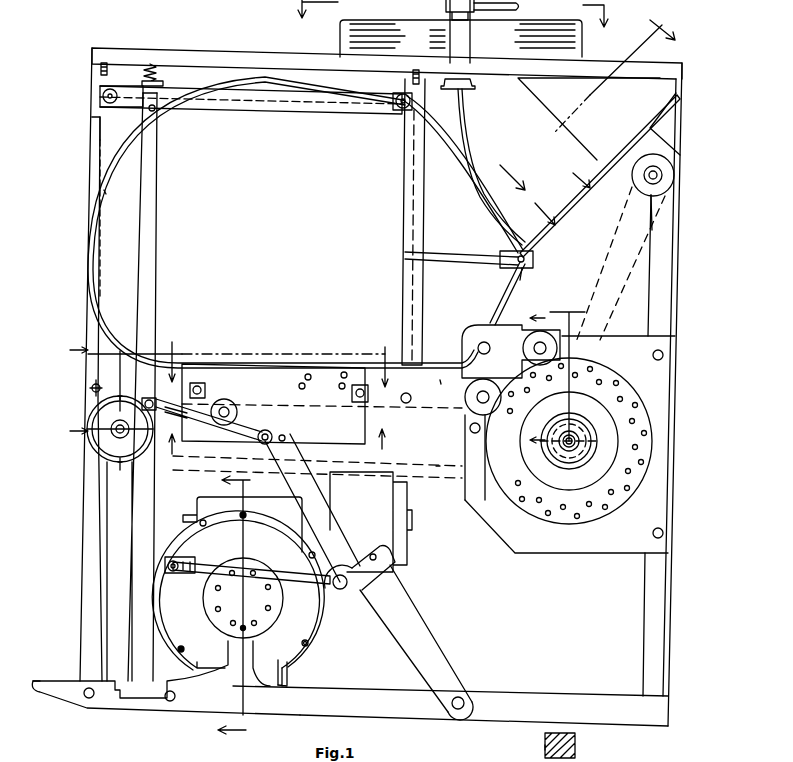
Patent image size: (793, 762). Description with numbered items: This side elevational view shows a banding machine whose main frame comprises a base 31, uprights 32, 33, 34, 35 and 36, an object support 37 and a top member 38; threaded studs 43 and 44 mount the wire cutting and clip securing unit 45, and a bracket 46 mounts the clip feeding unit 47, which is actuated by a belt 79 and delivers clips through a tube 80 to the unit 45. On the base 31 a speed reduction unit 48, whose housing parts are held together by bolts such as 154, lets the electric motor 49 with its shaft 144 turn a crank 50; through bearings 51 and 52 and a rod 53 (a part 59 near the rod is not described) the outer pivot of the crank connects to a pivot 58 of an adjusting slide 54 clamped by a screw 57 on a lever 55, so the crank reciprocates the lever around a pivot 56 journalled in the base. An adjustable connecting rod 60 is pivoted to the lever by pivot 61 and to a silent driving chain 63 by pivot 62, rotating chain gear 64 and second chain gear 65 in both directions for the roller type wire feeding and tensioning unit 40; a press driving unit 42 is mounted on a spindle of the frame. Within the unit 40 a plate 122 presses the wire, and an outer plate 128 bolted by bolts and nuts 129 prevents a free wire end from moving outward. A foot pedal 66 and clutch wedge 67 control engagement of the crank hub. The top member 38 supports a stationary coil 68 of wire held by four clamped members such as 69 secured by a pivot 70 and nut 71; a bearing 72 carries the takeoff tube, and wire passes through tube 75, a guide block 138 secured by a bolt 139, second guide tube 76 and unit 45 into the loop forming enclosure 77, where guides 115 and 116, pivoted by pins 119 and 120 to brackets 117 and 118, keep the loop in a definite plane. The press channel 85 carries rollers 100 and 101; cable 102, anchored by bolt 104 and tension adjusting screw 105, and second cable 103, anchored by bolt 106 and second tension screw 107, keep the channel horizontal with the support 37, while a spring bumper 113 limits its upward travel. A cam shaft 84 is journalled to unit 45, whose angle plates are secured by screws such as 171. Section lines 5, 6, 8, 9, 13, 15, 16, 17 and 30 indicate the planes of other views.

The section line 5- 5 is at (276, 374).
The cable 6 is at (116, 160).
The section line 8- 8 is at (552, 377).
The section line 9- 9 is at (88, 405).
The section line 13- 13 is at (576, 209).
The section line 15- 15 is at (244, 603).
The section line 16- 16 is at (454, 22).
The section line 17- 17 is at (278, 446).
The section line 30- 30 is at (578, 95).
The base 31 is at (583, 702).
The upright 32 is at (90, 565).
The upright 33 is at (652, 633).
The upright 34 is at (92, 158).
The upright 35 is at (403, 204).
The upright 36 is at (677, 268).
The object support 37 is at (230, 362).
The top member 38 is at (168, 48).
The roller type wire feeding and tensioning unit 40 is at (632, 455).
The press driving unit 42 is at (103, 440).
The threaded stud 43 is at (356, 405).
The threaded stud 44 is at (204, 386).
The wire cutting and clip securing unit 45 is at (265, 362).
The bracket 46 is at (656, 146).
The clip feeding unit 47 is at (608, 114).
The speed reduction unit 48 is at (298, 655).
The electric motor 49 is at (398, 554).
The crank 50 is at (228, 558).
The bearing 51 is at (165, 560).
The bearing 52 is at (300, 560).
The rod 53 is at (305, 575).
The adjusting slide 54 is at (382, 590).
The lever 55 is at (432, 646).
The pivot 56 is at (466, 698).
The screw 57 is at (370, 550).
The pivot 58 is at (340, 590).
The pivot pin 59 is at (165, 568).
The adjustable connecting rod 60 is at (272, 425).
The pivot 61 is at (272, 432).
The pivot 62 is at (148, 400).
The silent driving chain 63 is at (438, 470).
The chain gear 64 is at (590, 440).
The second chain gear 65 is at (103, 425).
The foot pedal 66 is at (40, 682).
The clutch wedge 67 is at (146, 707).
The stationary coil of wire 68 is at (588, 54).
The clamped member 69 is at (472, 72).
The pivot 70 is at (450, 8).
The nut 71 is at (515, 10).
The bearing 72 is at (466, 92).
The tube 75 is at (465, 145).
The second guide tube 76 is at (439, 389).
The loop forming enclosure 77 is at (418, 118).
The belt 79 is at (598, 290).
The tube 80 is at (566, 196).
The cam shaft 84 is at (230, 406).
The press channel 85 is at (244, 107).
The roller 100 is at (100, 92).
The roller 101 is at (412, 100).
The cable 102 is at (92, 117).
The second cable 103 is at (410, 160).
The bolt 104 is at (94, 386).
The tension adjusting screw 105 is at (412, 73).
The bolt 106 is at (414, 402).
The second tension screw 107 is at (100, 68).
The spring bumper 113 is at (162, 79).
The guide 115 is at (460, 262).
The guide 116 is at (157, 202).
The bracket 117 is at (538, 282).
The bracket 118 is at (143, 112).
The pin 119 is at (536, 260).
The pin 120 is at (158, 112).
The plate 122 is at (545, 750).
The outer plate 128 is at (664, 496).
The bolts and nuts 129 is at (664, 355).
The guide block 138 is at (478, 330).
The bolt 139 is at (489, 350).
The shaft 144 is at (196, 517).
The bolt 154 is at (320, 641).
The screw 171 is at (304, 382).